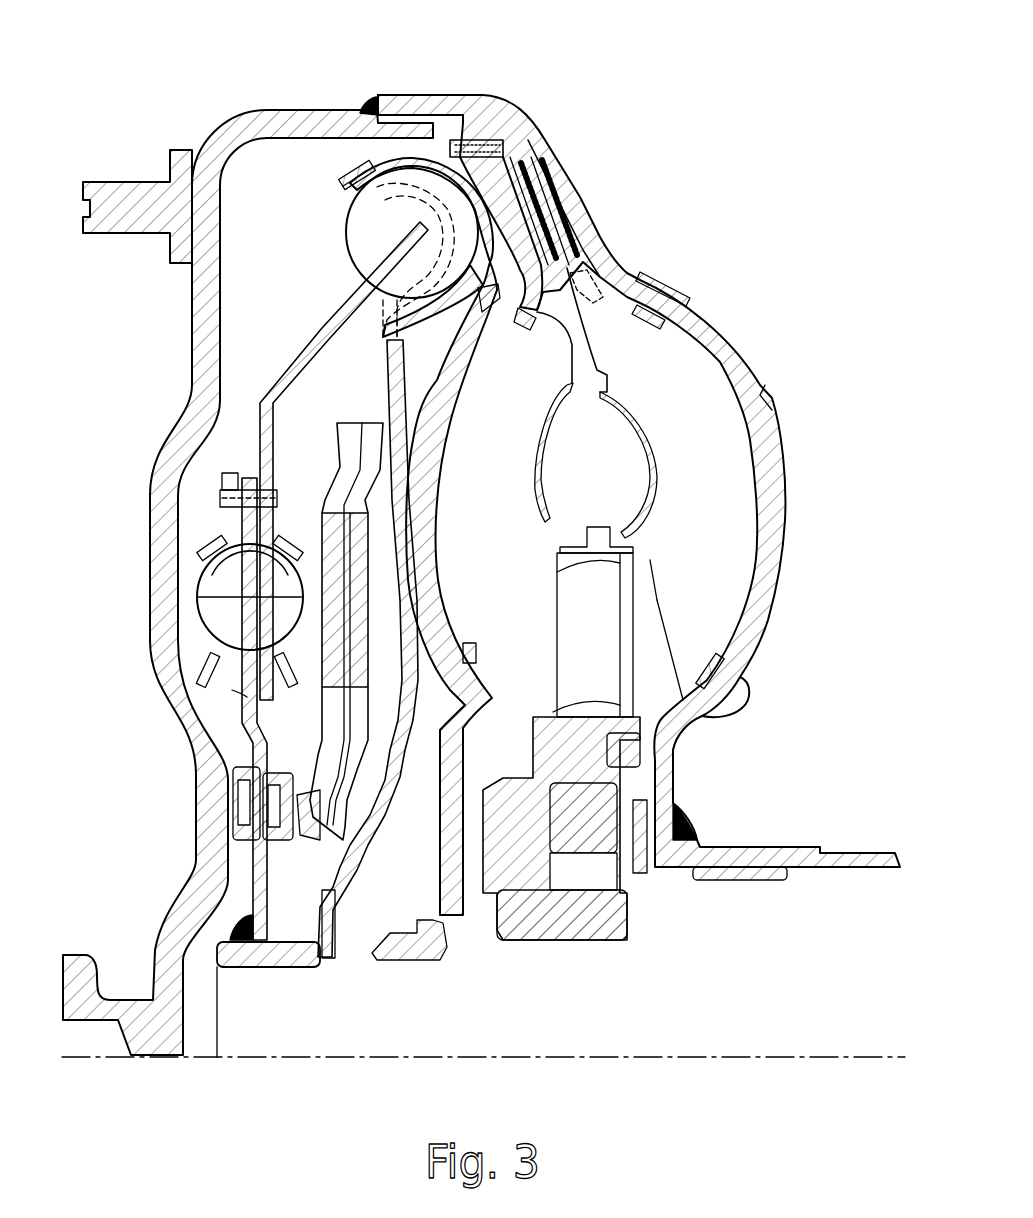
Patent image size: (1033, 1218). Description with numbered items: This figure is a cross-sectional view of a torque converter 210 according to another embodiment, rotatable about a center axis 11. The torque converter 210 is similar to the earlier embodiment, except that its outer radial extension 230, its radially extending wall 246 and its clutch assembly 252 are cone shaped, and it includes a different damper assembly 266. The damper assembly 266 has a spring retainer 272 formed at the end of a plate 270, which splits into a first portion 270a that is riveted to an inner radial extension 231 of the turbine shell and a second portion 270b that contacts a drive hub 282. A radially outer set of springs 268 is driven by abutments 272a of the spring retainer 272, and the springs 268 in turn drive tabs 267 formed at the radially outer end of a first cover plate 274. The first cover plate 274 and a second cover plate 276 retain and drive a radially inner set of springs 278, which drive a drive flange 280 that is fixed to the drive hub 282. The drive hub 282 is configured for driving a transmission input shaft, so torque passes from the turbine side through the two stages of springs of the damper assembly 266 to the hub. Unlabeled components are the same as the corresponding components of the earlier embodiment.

The center axis 11 is at (748, 1055).
The torque converter 210 is at (652, 92).
The outer radial extension 230 is at (446, 155).
The inner radial extension 231 is at (457, 862).
The radially extending wall 246 is at (580, 221).
The clutch assembly 252 is at (505, 137).
The damper assembly 266 is at (347, 165).
The tabs 267 is at (378, 320).
The radially outer set of springs 268 is at (352, 268).
The plate 270 is at (398, 643).
The first portion 270a is at (440, 832).
The second portion 270b is at (353, 883).
The spring retainer 272 is at (378, 266).
The abutments 272a is at (430, 202).
The first cover plate 274 is at (265, 481).
The second cover plate 276 is at (230, 520).
The radially inner set of springs 278 is at (203, 650).
The drive flange 280 is at (247, 692).
The drive hub 282 is at (287, 950).